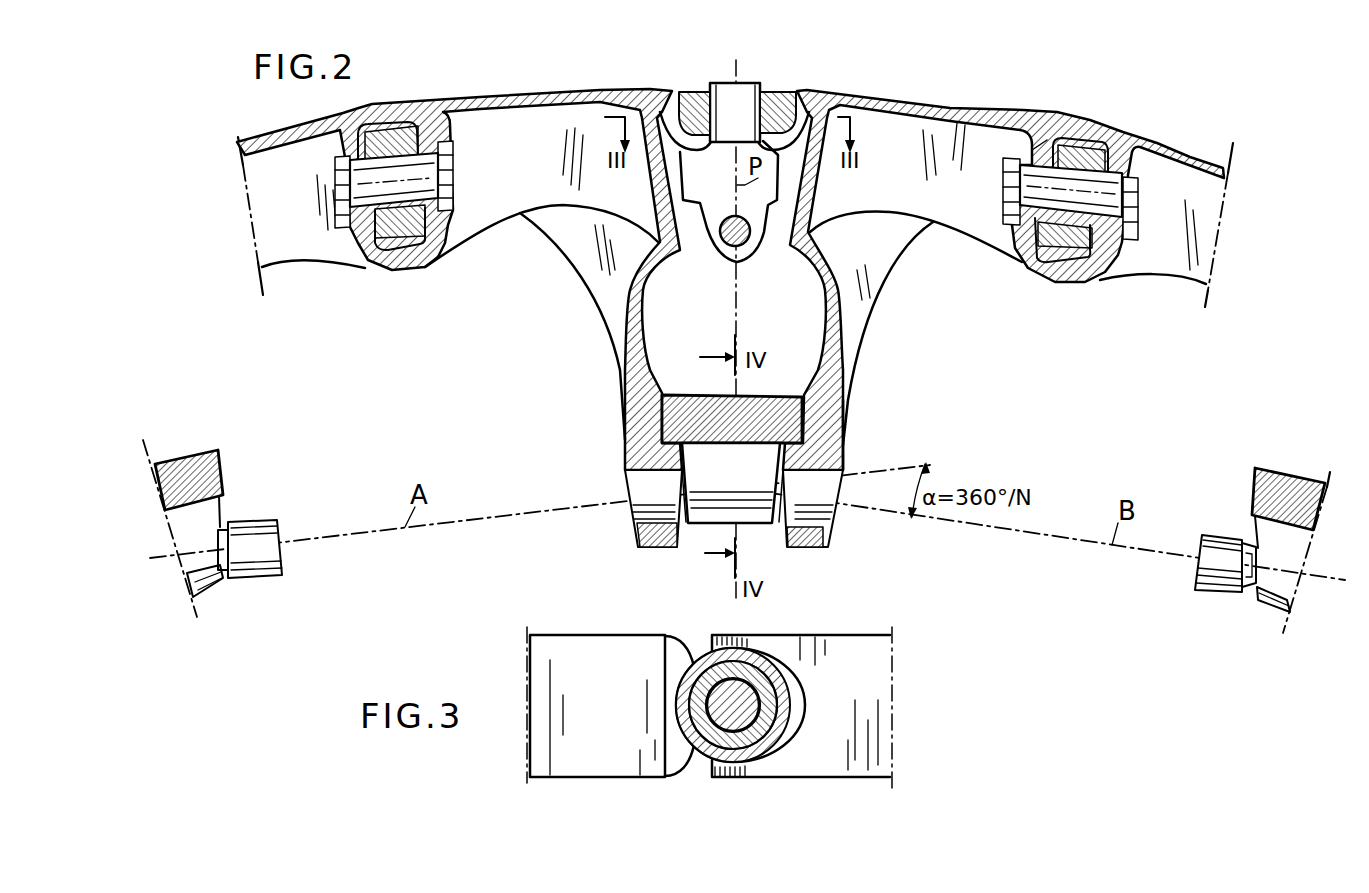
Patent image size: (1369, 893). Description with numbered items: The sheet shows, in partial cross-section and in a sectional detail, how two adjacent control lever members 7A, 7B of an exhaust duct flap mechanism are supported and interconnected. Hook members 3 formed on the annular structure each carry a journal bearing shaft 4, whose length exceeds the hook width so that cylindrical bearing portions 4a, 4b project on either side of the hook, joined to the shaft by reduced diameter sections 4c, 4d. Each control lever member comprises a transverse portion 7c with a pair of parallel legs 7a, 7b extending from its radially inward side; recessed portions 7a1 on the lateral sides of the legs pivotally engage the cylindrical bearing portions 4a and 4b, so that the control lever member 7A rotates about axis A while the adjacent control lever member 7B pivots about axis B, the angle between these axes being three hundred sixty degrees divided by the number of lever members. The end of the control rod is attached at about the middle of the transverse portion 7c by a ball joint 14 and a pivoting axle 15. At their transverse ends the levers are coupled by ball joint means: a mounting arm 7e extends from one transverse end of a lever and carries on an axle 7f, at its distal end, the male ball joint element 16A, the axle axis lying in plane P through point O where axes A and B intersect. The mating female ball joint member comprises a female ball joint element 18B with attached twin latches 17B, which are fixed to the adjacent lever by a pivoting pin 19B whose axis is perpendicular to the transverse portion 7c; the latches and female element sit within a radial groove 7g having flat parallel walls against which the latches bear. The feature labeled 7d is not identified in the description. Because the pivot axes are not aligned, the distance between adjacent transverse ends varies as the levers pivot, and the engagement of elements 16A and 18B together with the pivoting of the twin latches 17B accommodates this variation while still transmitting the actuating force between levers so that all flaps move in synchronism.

In FIG. 2, the hook member 3 is at (688, 393).
In FIG. 2, the journal bearing shaft 4 is at (751, 511).
In FIG. 2, the cylindrical bearing portion 4a is at (830, 533).
In FIG. 2, the cylindrical bearing portion 4b is at (1214, 536).
In FIG. 2, the reduced diameter section 4c is at (780, 512).
In FIG. 2, the reduced diameter section 4d is at (680, 474).
In FIG. 2, the control lever member 7A is at (476, 150).
In FIG. 3, the control lever member 7A is at (553, 648).
In FIG. 2, the control lever member 7B is at (990, 147).
In FIG. 3, the control lever member 7B is at (847, 647).
In FIG. 2, the leg 7a is at (870, 318).
In FIG. 2, the recessed portion 7a1 is at (800, 508).
In FIG. 2, the leg 7b is at (612, 320).
In FIG. 2, the transverse portion 7c is at (546, 133).
In FIG. 2, the recess 7d is at (1047, 140).
In FIG. 2, the mounting arm 7e is at (680, 204).
In FIG. 3, the mounting arm 7e is at (673, 667).
In FIG. 2, the axle 7f is at (752, 100).
In FIG. 3, the axle 7f is at (763, 711).
In FIG. 2, the groove 7g is at (773, 254).
In FIG. 3, the groove 7g is at (793, 738).
In FIG. 2, the ball joint 14 is at (1110, 131).
In FIG. 2, the pivoting axle 15 is at (1107, 203).
In FIG. 2, the male ball joint element 16A is at (789, 94).
In FIG. 3, the male ball joint element 16A is at (773, 697).
In FIG. 2, the twin latches 17B is at (720, 212).
In FIG. 2, the female ball joint element 18B is at (688, 97).
In FIG. 3, the female ball joint element 18B is at (795, 673).
In FIG. 2, the pivoting pin 19B is at (752, 227).